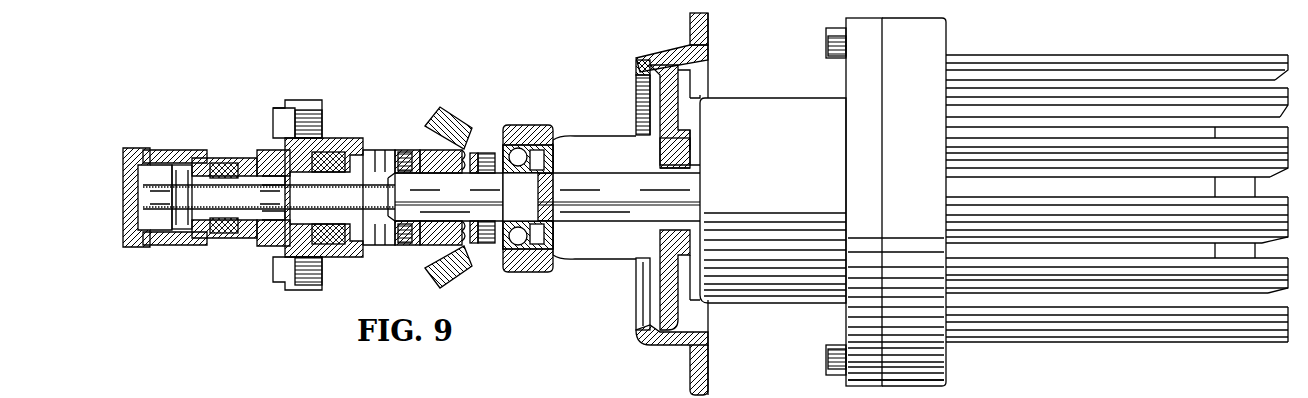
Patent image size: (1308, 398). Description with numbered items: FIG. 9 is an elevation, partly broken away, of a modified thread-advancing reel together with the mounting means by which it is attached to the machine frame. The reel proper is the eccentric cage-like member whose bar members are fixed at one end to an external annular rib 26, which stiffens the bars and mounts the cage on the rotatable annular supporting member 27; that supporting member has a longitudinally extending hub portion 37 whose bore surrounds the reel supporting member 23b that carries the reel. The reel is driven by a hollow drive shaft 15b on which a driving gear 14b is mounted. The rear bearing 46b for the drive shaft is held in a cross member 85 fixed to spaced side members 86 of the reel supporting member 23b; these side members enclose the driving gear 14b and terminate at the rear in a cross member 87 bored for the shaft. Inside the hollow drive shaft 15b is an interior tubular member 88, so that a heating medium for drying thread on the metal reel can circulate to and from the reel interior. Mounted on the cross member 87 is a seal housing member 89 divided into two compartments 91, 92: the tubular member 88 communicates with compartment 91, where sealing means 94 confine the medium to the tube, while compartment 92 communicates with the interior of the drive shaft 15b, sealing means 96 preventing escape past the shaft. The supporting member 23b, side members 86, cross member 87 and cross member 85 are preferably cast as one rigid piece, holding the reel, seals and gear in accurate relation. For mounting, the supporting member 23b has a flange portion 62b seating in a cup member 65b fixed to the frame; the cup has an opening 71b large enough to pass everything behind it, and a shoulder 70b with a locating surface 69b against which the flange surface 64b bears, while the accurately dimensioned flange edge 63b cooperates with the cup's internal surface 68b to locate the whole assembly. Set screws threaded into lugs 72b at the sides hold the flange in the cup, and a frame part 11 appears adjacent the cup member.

The flange 11 is at (712, 363).
The driving gear 14b is at (460, 270).
The drive shaft 15b is at (544, 197).
The reel supporting member 23b is at (668, 153).
The external annular rib 26 is at (905, 152).
The annular supporting member 27 is at (858, 130).
The hub portion 37 is at (765, 182).
The rear bearing 46b is at (494, 140).
The flange portion 62b is at (680, 82).
The edge 63b is at (650, 62).
The surface 64b is at (636, 120).
The cup member 65b is at (690, 42).
The internal surface 68b is at (705, 325).
The locating surface 69b is at (640, 65).
The shoulder 70b is at (636, 334).
The opening 71b is at (636, 295).
The lugs 72b is at (820, 380).
The cross member 85 is at (544, 126).
The side members 86 is at (590, 140).
The cross member 87 is at (318, 114).
The interior tubular member 88 is at (343, 203).
The member 89 is at (232, 240).
The compartment 91 is at (185, 228).
The compartment 92 is at (268, 248).
The sealing means 94 is at (249, 160).
The sealing means 96 is at (338, 250).